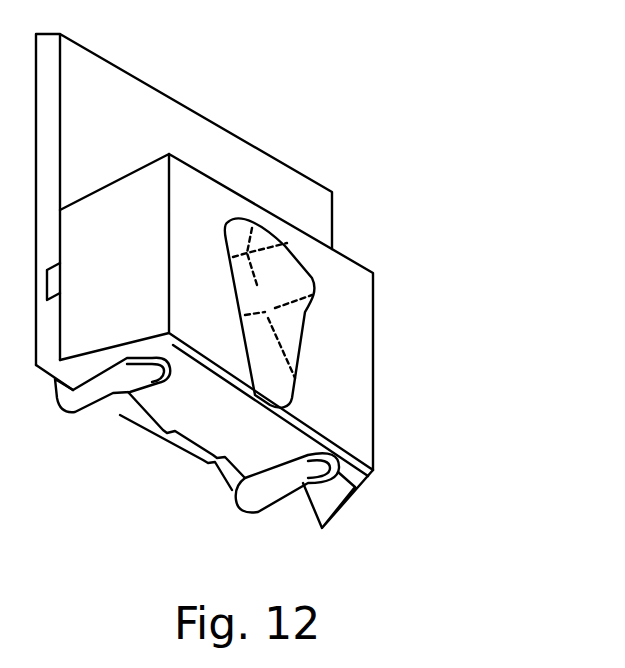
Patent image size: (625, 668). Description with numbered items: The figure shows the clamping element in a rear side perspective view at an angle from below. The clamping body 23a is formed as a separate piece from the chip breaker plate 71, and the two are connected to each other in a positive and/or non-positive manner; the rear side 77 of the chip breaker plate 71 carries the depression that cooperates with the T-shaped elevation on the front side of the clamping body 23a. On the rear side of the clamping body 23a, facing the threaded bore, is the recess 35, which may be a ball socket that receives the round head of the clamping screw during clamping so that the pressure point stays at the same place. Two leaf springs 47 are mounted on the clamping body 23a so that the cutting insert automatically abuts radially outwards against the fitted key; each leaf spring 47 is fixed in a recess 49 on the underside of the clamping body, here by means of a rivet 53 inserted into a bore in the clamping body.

The rear side of the chip breaker plate 77 is at (205, 145).
The chip breaker plate 71 is at (280, 163).
The recess 35 is at (290, 282).
The clamping body 23a is at (373, 347).
The rivet 53 is at (330, 462).
The leaf spring 47 is at (77, 400).
The recess 49 is at (143, 378).